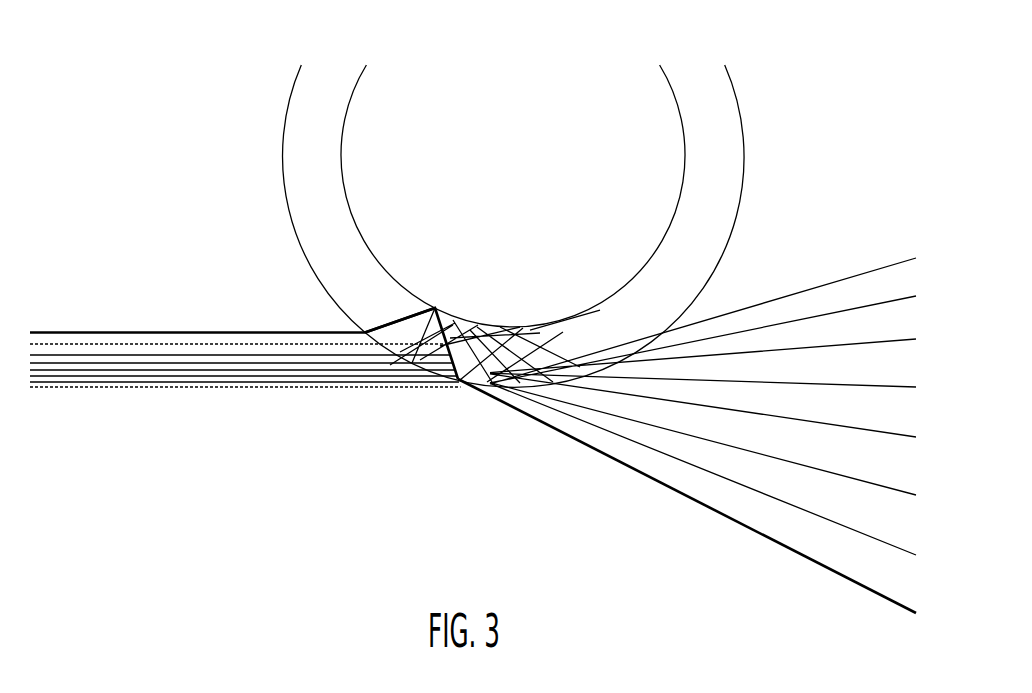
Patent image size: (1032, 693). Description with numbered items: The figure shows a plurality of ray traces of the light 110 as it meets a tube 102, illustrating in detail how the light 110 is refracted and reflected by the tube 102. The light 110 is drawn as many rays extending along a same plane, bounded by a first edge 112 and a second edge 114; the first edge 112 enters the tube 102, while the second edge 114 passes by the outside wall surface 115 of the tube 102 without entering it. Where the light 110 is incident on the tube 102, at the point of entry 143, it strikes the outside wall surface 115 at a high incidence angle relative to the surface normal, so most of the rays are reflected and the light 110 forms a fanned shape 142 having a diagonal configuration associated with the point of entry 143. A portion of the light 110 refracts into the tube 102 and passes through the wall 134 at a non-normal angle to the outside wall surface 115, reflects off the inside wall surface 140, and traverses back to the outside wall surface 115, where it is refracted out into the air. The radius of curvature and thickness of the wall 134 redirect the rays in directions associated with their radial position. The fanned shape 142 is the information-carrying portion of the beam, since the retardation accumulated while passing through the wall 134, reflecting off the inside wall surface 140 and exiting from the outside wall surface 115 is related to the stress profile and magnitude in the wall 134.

The tube 102 is at (730, 137).
The wall 134 is at (685, 203).
The inside wall surface 140 is at (405, 291).
The point of entry 143 is at (386, 371).
The fanned shape 142 is at (671, 422).
The light 110 is at (207, 385).
The first edge 112 is at (108, 332).
The second edge 114 is at (115, 387).
The outside wall surface 115 is at (328, 293).